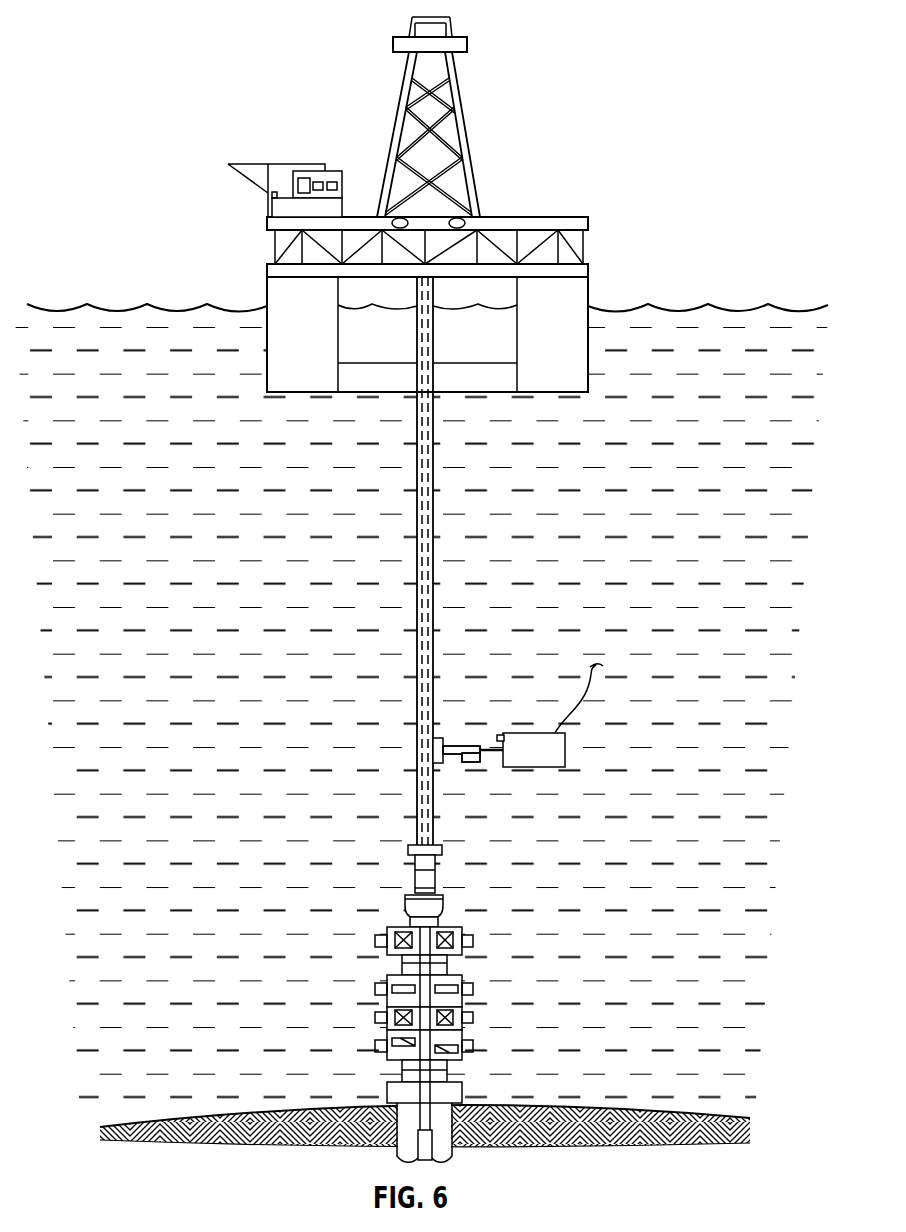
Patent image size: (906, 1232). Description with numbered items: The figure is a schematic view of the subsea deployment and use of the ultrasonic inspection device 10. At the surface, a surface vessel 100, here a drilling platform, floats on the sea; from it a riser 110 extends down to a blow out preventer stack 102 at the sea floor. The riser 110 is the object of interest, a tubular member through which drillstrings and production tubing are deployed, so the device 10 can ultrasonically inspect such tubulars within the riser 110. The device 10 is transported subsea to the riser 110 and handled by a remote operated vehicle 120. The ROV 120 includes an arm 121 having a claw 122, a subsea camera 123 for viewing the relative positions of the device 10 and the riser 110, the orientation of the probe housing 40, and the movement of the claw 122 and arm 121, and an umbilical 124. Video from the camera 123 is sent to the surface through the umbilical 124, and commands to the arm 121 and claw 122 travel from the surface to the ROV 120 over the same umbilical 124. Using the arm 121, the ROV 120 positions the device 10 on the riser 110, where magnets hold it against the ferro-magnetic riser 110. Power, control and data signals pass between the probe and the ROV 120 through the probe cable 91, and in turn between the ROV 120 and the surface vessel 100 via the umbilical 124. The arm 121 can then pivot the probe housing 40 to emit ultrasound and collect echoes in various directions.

The surface vessel 100 is at (461, 84).
The riser 110 is at (436, 602).
The ultrasonic inspection device 10 is at (461, 747).
The probe housing 40 is at (451, 758).
The probe cable 91 is at (471, 763).
The arm 121 is at (494, 747).
The claw 122 is at (482, 762).
The subsea camera 123 is at (501, 736).
The remote operated vehicle 120 is at (566, 751).
The umbilical 124 is at (582, 700).
The blow out preventer stack 102 is at (481, 969).